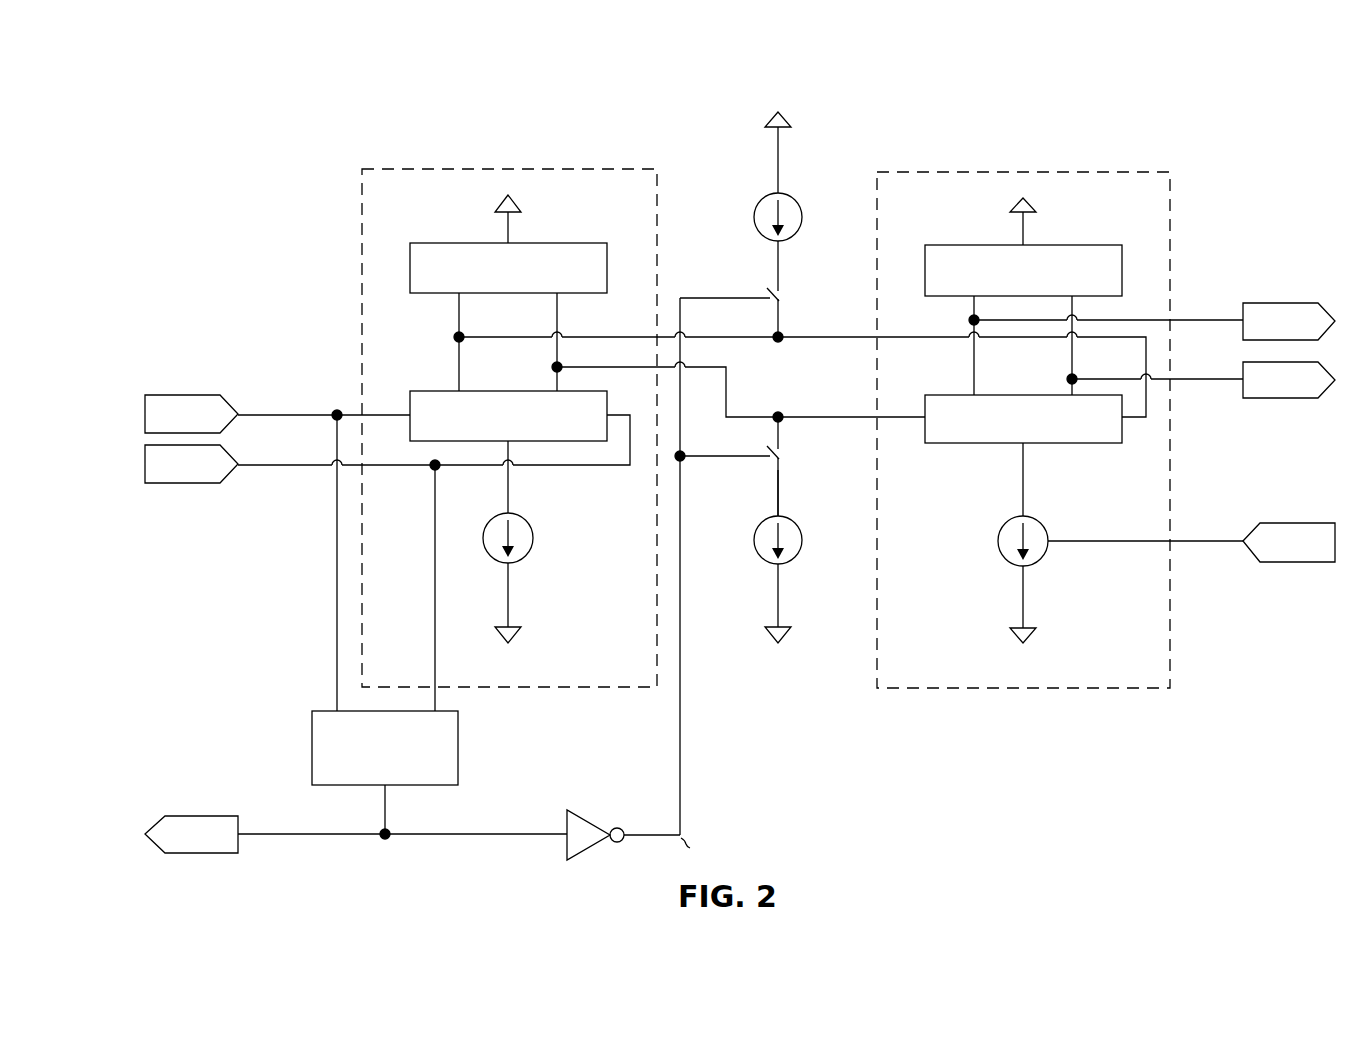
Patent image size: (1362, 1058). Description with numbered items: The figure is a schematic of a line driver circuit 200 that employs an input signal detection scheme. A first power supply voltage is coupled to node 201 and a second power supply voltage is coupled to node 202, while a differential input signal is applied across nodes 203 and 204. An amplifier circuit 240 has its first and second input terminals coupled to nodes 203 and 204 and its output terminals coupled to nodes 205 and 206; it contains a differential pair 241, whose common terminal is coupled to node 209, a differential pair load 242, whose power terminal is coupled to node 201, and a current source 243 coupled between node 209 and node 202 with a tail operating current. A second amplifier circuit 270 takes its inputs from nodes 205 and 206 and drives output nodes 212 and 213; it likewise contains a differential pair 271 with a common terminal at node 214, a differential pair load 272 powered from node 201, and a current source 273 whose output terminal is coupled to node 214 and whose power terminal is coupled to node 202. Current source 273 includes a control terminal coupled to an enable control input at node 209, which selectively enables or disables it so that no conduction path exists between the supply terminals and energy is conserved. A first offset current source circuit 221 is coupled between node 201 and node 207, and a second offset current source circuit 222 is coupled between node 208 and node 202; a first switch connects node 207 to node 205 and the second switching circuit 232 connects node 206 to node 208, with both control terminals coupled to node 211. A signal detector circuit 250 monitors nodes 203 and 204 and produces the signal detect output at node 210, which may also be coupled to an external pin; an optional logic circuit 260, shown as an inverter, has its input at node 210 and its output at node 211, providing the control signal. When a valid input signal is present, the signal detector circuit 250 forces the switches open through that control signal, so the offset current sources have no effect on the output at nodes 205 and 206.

The line driver circuit 200 is at (1306, 97).
The node 201 is at (515, 210).
The node 202 is at (518, 632).
The node 203 is at (270, 407).
The node 204 is at (270, 457).
The node 205 is at (605, 336).
The node 206 is at (605, 366).
The node 207 is at (781, 252).
The node 208 is at (781, 507).
The node 209 is at (510, 511).
The node 210 is at (262, 833).
The node 211 is at (681, 786).
The node 212 is at (1218, 312).
The node 213 is at (1210, 378).
The node 214 is at (1025, 490).
The current source circuit 221 is at (753, 214).
The current source circuit 222 is at (763, 518).
The switching circuit 232 is at (769, 306).
The amplifier circuit 240 is at (657, 171).
The differential pair 241 is at (409, 389).
The differential pair load 242 is at (409, 244).
The current source 243 is at (492, 517).
The signal detector circuit 250 is at (310, 748).
The optional logic circuit 260 is at (582, 816).
The amplifier circuit 270 is at (1170, 173).
The differential pair 271 is at (925, 389).
The differential pair load 272 is at (925, 244).
The current source 273 is at (1006, 520).